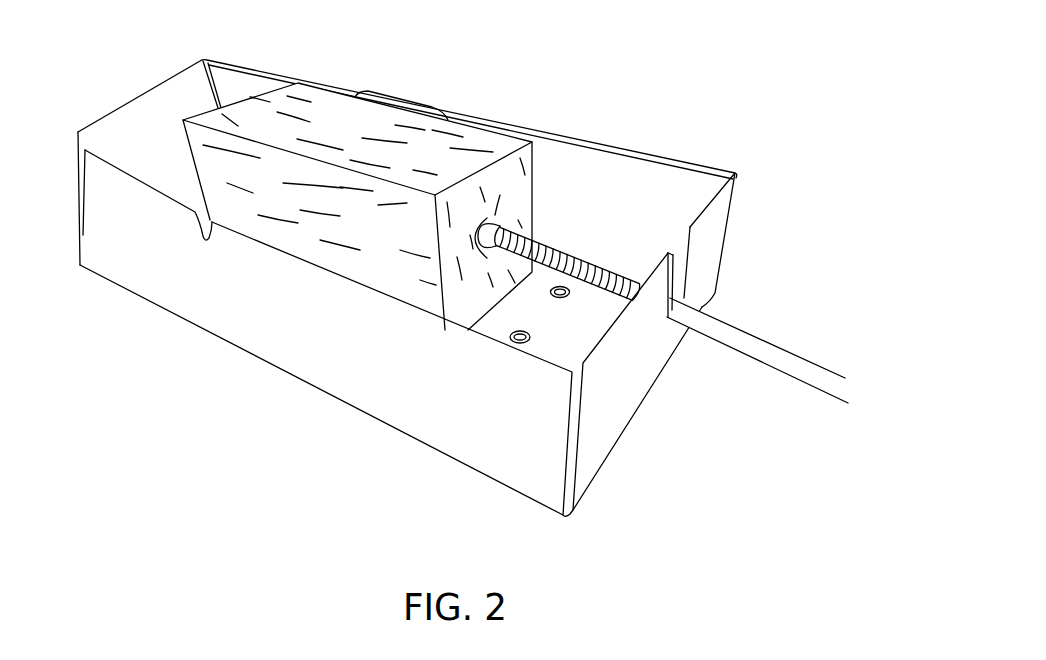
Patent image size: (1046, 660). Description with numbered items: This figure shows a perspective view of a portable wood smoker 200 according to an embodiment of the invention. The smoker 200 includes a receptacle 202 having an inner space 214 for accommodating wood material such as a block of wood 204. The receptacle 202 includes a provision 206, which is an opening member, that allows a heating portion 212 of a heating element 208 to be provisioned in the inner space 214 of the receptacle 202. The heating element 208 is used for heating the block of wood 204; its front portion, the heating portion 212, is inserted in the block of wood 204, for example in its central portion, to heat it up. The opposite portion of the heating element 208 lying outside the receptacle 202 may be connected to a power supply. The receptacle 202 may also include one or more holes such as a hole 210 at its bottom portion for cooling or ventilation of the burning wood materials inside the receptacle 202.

The portable wood smoker 200 is at (145, 487).
The receptacle 202 is at (303, 333).
The block of wood 204 is at (390, 128).
The provision 206 is at (678, 251).
The heating element 208 is at (697, 320).
The hole 210 is at (517, 338).
The heating portion 212 is at (545, 243).
The inner space 214 is at (173, 178).